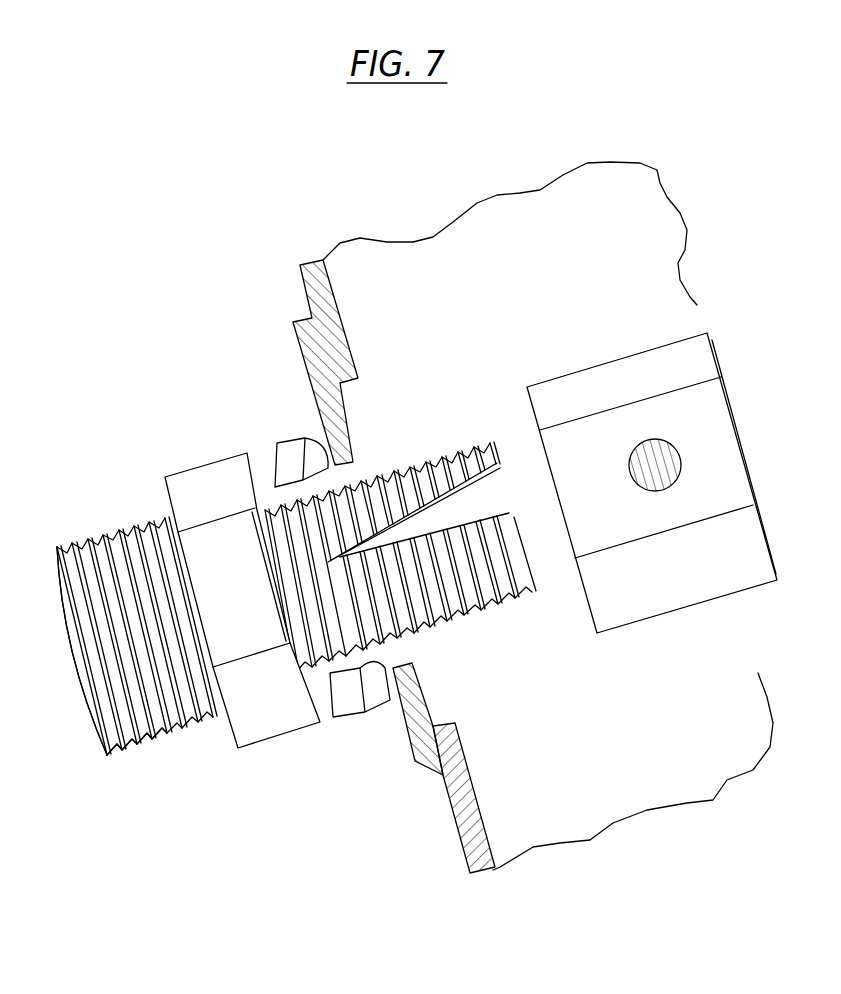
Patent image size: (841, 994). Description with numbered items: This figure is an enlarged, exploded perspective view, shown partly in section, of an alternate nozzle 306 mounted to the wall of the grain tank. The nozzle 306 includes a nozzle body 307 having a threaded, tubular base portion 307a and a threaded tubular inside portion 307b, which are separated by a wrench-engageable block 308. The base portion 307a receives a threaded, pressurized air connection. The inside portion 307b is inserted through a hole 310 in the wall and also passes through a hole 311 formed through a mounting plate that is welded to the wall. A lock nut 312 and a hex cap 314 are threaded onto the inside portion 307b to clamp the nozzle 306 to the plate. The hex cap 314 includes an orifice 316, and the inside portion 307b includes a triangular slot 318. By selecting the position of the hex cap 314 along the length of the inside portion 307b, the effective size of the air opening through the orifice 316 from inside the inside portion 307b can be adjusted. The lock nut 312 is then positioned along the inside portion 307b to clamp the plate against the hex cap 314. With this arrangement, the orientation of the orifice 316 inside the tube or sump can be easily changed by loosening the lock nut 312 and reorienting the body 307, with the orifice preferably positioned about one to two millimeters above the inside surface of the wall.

The nozzle 306 is at (475, 322).
The nozzle body 307 is at (90, 515).
The threaded tubular base portion 307a is at (137, 748).
The threaded tubular inside portion 307b is at (467, 640).
The wrench-engageable block 308 is at (248, 750).
The hole 310 is at (443, 722).
The hole 311 is at (348, 468).
The lock nut 312 is at (290, 440).
The hex cap 314 is at (688, 607).
The orifice 316 is at (682, 468).
The triangular slot 318 is at (463, 493).